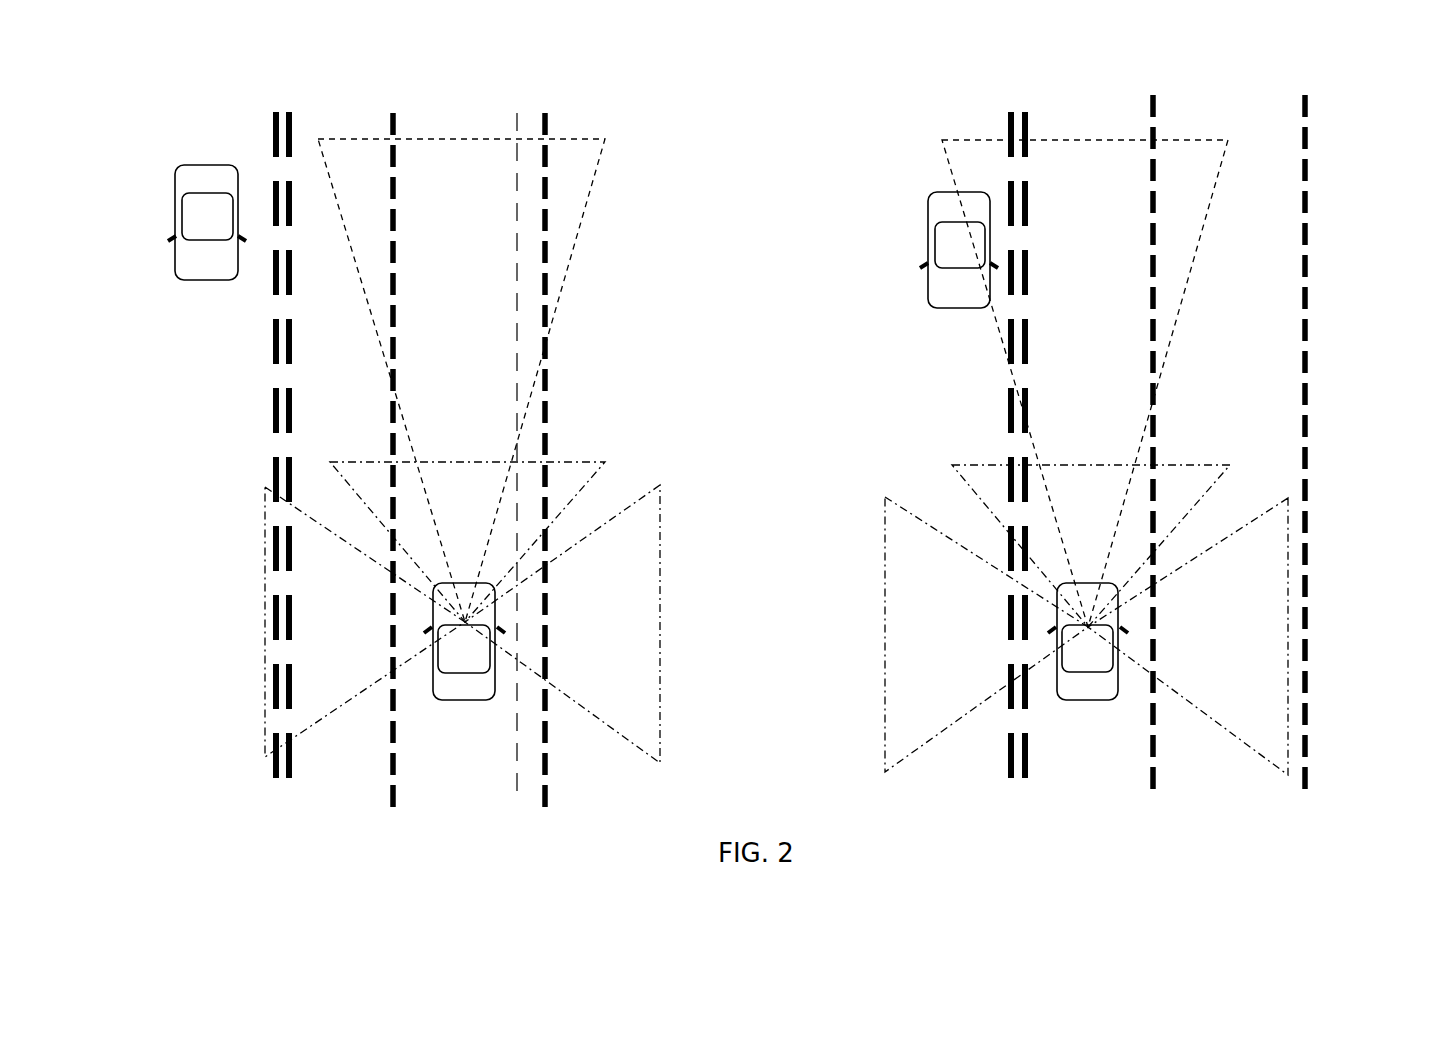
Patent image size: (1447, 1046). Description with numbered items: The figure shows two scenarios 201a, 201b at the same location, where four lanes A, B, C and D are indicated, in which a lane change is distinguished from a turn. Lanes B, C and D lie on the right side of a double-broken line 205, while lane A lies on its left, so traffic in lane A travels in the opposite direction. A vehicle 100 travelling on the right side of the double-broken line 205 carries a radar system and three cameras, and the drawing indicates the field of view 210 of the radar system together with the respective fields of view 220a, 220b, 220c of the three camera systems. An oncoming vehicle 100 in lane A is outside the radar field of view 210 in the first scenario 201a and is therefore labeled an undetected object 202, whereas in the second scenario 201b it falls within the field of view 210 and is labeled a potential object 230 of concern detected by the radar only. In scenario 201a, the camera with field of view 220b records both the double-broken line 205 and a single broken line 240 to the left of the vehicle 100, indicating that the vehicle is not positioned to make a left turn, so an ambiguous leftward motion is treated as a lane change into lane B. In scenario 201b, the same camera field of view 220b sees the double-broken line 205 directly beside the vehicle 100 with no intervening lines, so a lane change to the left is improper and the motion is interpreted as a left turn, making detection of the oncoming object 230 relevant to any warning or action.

The first scenario 201a is at (167, 127).
The second scenario 201b is at (1344, 156).
The vehicle 100 is at (458, 688).
The undetected object 202 is at (222, 282).
The potential object of concern 230 is at (928, 240).
The double-broken line 205 is at (281, 96).
The single broken line 240 is at (420, 96).
The field of view of the radar system 210 is at (940, 140).
The field of view of the first camera system 220a is at (958, 463).
The field of view of the second camera system 220b is at (315, 522).
The field of view of the third camera system 220c is at (660, 612).